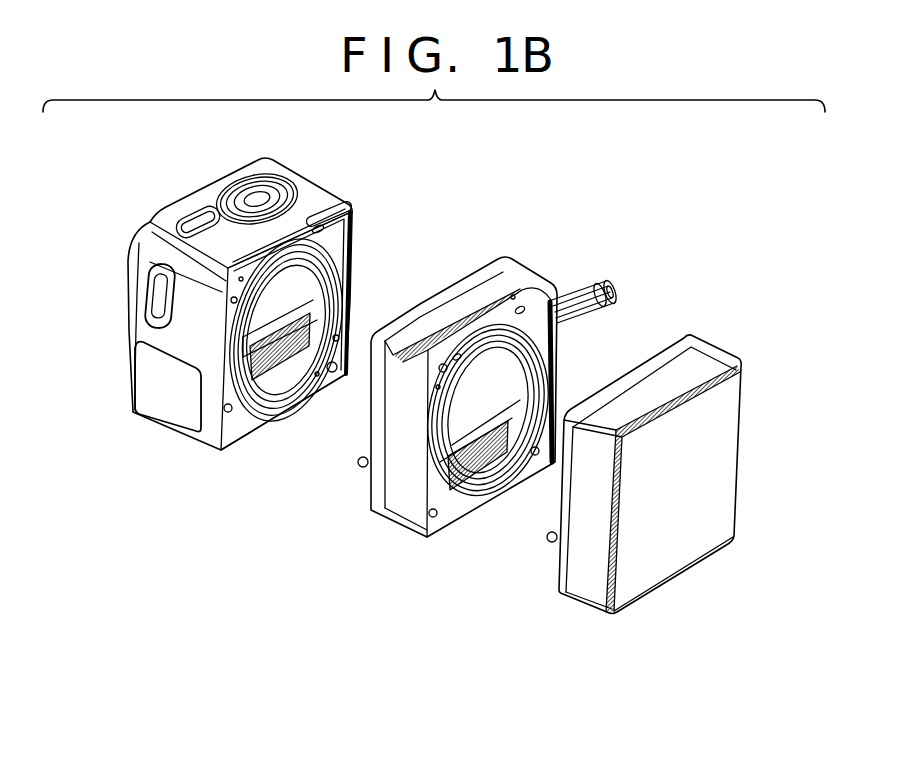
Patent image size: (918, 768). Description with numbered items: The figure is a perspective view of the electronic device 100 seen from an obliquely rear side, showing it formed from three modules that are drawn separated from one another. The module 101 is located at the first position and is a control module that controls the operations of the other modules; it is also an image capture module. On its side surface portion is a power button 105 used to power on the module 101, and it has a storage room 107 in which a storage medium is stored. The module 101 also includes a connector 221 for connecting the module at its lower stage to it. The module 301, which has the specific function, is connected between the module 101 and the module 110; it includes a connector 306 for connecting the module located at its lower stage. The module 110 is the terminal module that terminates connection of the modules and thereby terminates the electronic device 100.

The electronic device 100 is at (607, 229).
The module 101 is at (267, 173).
The power button 105 is at (158, 307).
The storage room 107 is at (162, 403).
The module 110 is at (717, 346).
The connector 221 is at (273, 363).
The module 301 is at (497, 258).
The connector 306 is at (477, 437).